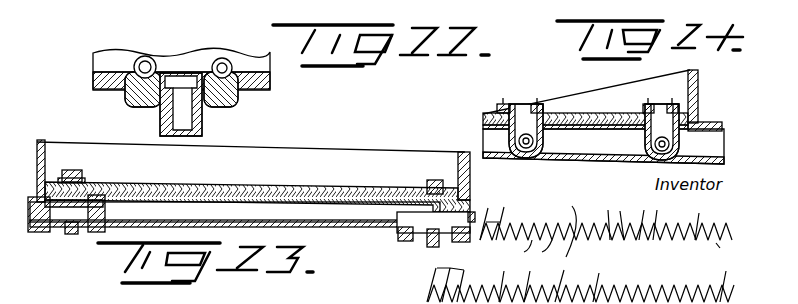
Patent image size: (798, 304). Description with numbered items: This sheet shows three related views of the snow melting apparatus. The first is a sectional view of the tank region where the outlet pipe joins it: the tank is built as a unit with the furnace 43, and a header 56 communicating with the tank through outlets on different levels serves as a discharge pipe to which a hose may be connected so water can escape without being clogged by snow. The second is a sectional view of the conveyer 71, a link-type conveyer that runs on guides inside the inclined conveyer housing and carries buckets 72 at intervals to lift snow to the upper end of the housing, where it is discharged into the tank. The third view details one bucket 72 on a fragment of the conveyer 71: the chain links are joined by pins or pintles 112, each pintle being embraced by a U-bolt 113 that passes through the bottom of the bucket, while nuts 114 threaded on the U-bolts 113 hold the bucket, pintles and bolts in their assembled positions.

In FIG. 22, the furnace 43 is at (262, 70).
In FIG. 22, the header 56 is at (161, 117).
In FIG. 23, the conveyer 71 is at (40, 225).
In FIG. 24, the conveyer 71 is at (578, 152).
In FIG. 23, the buckets 72 is at (305, 162).
In FIG. 24, the buckets 72 is at (697, 91).
In FIG. 23, the pins or pintles 112 is at (367, 222).
In FIG. 24, the pins or pintles 112 is at (518, 152).
In FIG. 23, the U-bolts 113 is at (72, 228).
In FIG. 24, the U-bolts 113 is at (507, 136).
In FIG. 23, the nuts 114 is at (83, 173).
In FIG. 24, the nuts 114 is at (539, 101).